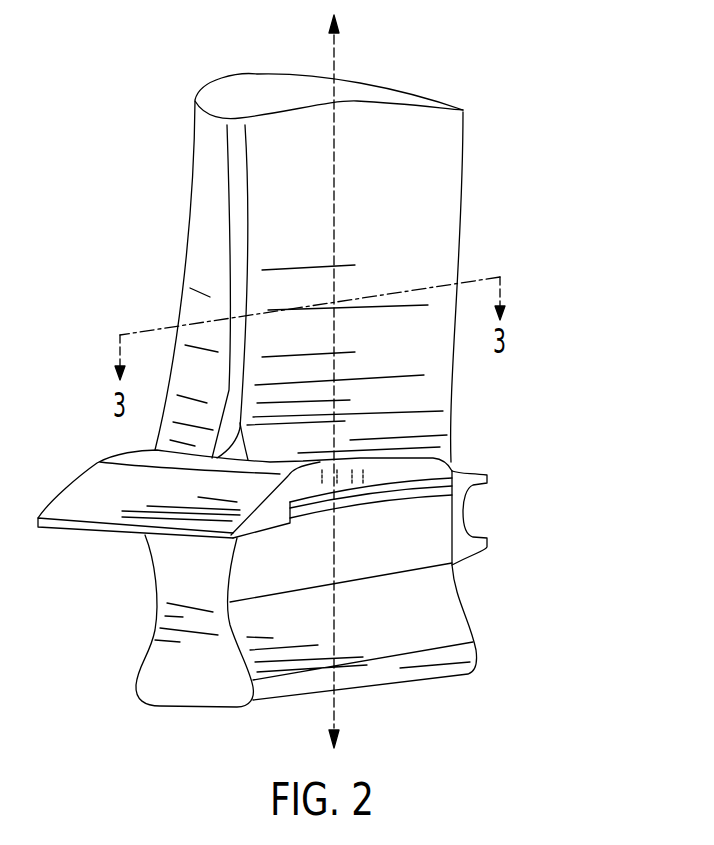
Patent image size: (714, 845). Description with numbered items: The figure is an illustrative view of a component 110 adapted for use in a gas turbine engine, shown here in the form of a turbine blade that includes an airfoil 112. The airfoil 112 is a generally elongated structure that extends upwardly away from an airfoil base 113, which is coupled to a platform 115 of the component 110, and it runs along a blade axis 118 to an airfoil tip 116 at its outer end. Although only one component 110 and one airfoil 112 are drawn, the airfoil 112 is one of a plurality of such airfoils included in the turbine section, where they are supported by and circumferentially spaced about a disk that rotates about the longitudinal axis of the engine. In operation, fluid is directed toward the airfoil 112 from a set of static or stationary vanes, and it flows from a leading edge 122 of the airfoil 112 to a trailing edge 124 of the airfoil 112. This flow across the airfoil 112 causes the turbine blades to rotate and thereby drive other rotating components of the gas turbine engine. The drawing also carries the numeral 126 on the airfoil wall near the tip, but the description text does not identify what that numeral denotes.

The component 110 is at (552, 77).
The airfoil 112 is at (334, 247).
The airfoil base 113 is at (457, 468).
The platform 115 is at (92, 516).
The airfoil tip 116 is at (408, 98).
The blade axis 118 is at (336, 70).
The leading edge 122 is at (226, 236).
The trailing edge 124 is at (468, 252).
The suction side / airfoil wall 126 is at (208, 162).